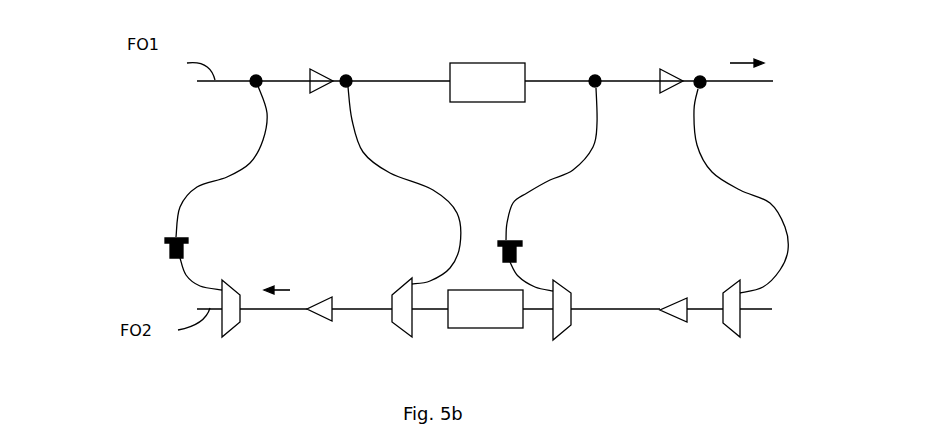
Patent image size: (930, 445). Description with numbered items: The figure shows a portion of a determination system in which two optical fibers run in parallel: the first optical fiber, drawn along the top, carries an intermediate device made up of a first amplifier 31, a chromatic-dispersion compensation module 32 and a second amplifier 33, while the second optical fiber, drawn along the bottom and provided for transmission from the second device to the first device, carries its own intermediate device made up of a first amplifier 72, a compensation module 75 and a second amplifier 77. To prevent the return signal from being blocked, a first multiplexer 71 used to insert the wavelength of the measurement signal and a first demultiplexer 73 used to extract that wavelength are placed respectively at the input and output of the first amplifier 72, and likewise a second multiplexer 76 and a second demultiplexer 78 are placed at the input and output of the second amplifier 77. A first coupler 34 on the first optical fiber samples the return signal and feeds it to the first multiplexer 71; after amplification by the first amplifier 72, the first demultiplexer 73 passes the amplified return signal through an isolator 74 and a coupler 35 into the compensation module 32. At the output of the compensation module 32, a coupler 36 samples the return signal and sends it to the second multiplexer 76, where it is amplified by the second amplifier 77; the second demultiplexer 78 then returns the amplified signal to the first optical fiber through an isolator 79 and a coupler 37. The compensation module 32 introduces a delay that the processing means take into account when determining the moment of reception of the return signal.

The first amplifier 31 is at (310, 70).
The chromatic-dispersion compensation module 32 is at (472, 62).
The second amplifier 33 is at (659, 70).
The first coupler 34 is at (703, 92).
The coupler 35 is at (586, 78).
The coupler 36 is at (350, 88).
The coupler 37 is at (250, 78).
The first multiplexer 71 is at (740, 337).
The first amplifier 72 is at (687, 322).
The first demultiplexer 73 is at (553, 340).
The isolator 74 is at (516, 258).
The compensation module 75 is at (463, 328).
The second multiplexer 76 is at (412, 337).
The second amplifier 77 is at (332, 321).
The second demultiplexer 78 is at (222, 337).
The isolator 79 is at (183, 252).